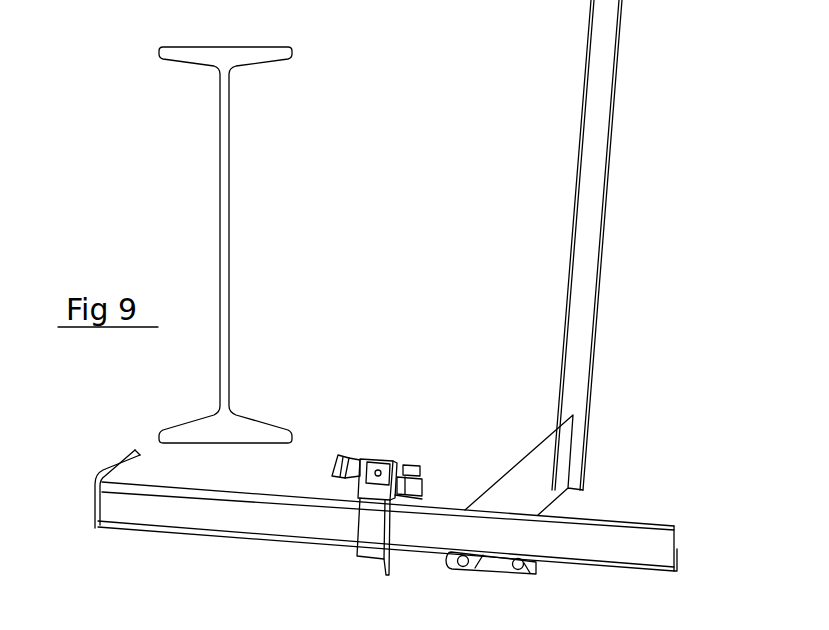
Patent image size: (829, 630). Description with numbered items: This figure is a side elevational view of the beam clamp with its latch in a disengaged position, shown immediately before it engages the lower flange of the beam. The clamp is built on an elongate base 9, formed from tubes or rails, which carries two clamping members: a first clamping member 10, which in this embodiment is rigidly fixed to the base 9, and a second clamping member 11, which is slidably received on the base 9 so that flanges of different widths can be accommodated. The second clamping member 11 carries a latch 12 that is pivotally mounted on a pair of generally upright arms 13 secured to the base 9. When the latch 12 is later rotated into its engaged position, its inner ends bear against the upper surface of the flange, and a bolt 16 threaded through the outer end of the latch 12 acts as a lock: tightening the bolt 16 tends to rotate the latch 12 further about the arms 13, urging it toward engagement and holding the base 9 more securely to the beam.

The base 9 is at (629, 521).
The first clamping member 10 is at (118, 457).
The second clamping member 11 is at (393, 457).
The latch 12 is at (360, 458).
The arms 13 is at (370, 538).
The bolt 16 is at (418, 467).